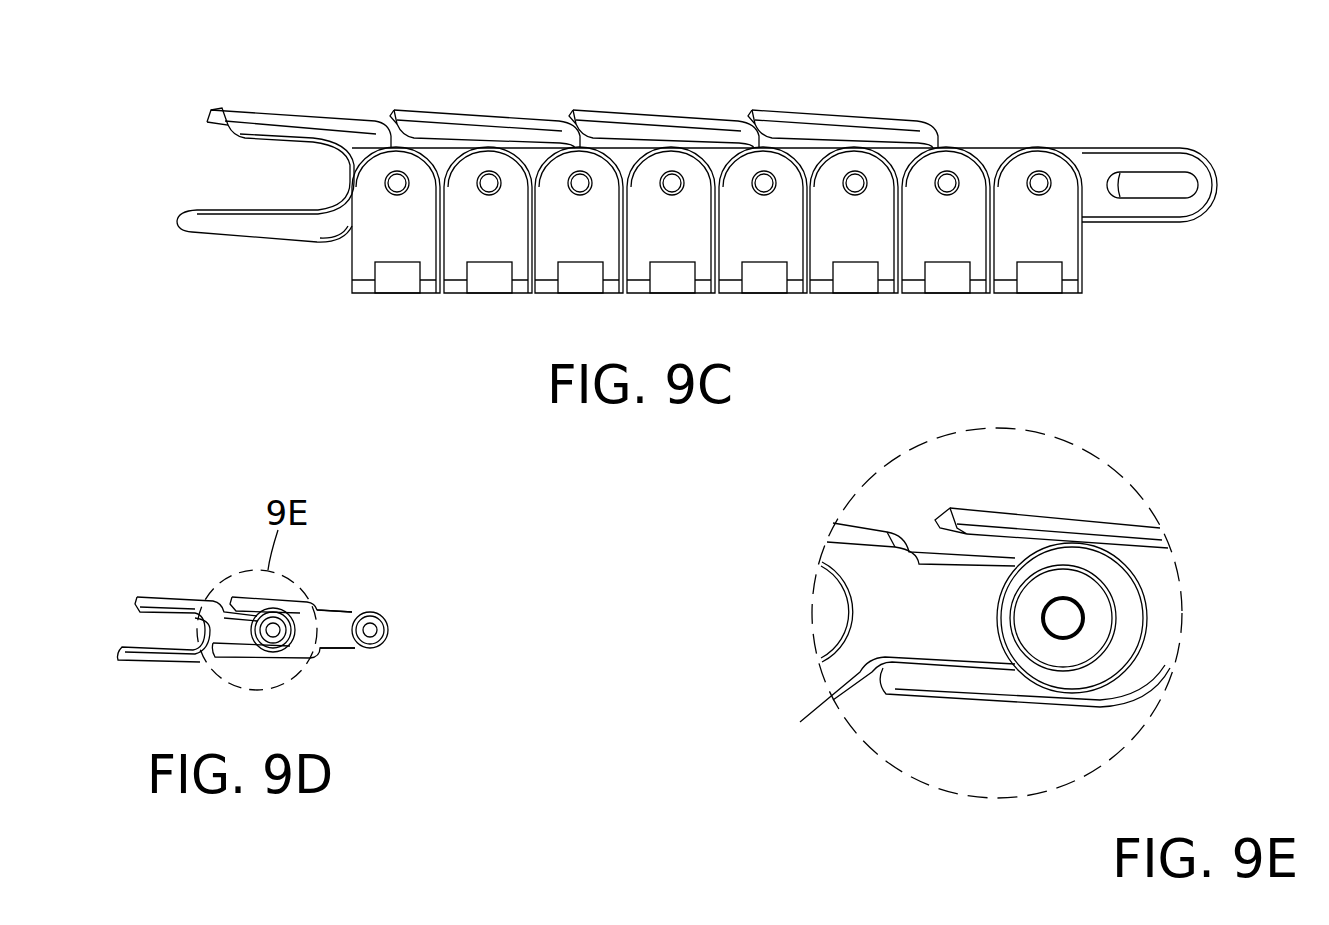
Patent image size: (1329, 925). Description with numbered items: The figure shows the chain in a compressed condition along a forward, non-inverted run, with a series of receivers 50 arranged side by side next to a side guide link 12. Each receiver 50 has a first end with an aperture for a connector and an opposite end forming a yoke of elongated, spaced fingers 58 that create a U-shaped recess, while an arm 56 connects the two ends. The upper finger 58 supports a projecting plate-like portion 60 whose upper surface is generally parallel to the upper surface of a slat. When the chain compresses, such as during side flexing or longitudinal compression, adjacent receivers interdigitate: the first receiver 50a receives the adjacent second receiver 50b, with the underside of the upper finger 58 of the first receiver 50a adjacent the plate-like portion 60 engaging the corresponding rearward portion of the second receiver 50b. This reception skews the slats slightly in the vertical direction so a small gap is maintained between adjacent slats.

In FIG. 9C, the receiver 50 is at (305, 110).
In FIG. 9C, the side guide link 12 is at (1145, 157).
In FIG. 9D, the first receiver 50a is at (175, 597).
In FIG. 9E, the first receiver 50a is at (850, 675).
In FIG. 9D, the second receiver 50b is at (347, 610).
In FIG. 9E, the second receiver 50b is at (1163, 622).
In FIG. 9E, the arm 56 is at (893, 512).
In FIG. 9E, the finger 58 is at (970, 512).
In FIG. 9E, the plate-like portion 60 is at (1137, 538).